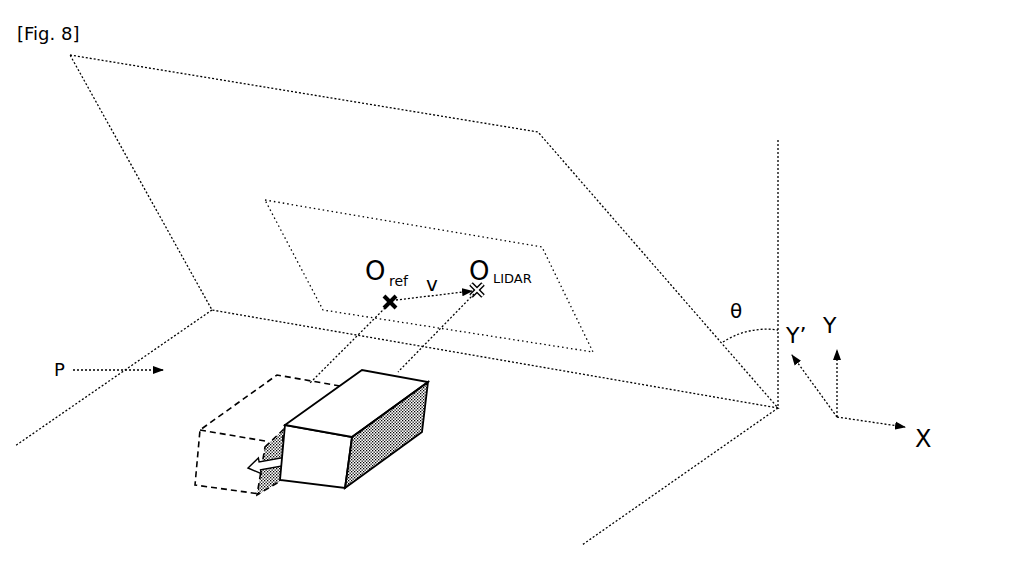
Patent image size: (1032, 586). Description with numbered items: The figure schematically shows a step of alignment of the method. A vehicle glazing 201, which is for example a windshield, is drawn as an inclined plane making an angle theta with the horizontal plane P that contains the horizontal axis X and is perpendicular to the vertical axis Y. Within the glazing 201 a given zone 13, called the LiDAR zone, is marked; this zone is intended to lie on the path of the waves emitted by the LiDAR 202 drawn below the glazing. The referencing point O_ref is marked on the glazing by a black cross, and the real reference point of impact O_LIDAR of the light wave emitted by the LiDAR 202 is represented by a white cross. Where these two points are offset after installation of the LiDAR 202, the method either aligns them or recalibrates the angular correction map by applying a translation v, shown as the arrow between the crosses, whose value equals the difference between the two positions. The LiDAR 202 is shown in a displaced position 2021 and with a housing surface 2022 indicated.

The given zone 13 is at (390, 223).
The vehicle glazing 201 is at (622, 228).
The LiDAR 202 is at (405, 453).
The LIDAR sensor at displaced position 2021 is at (262, 413).
The LIDAR sensor housing top surface 2022 is at (365, 403).